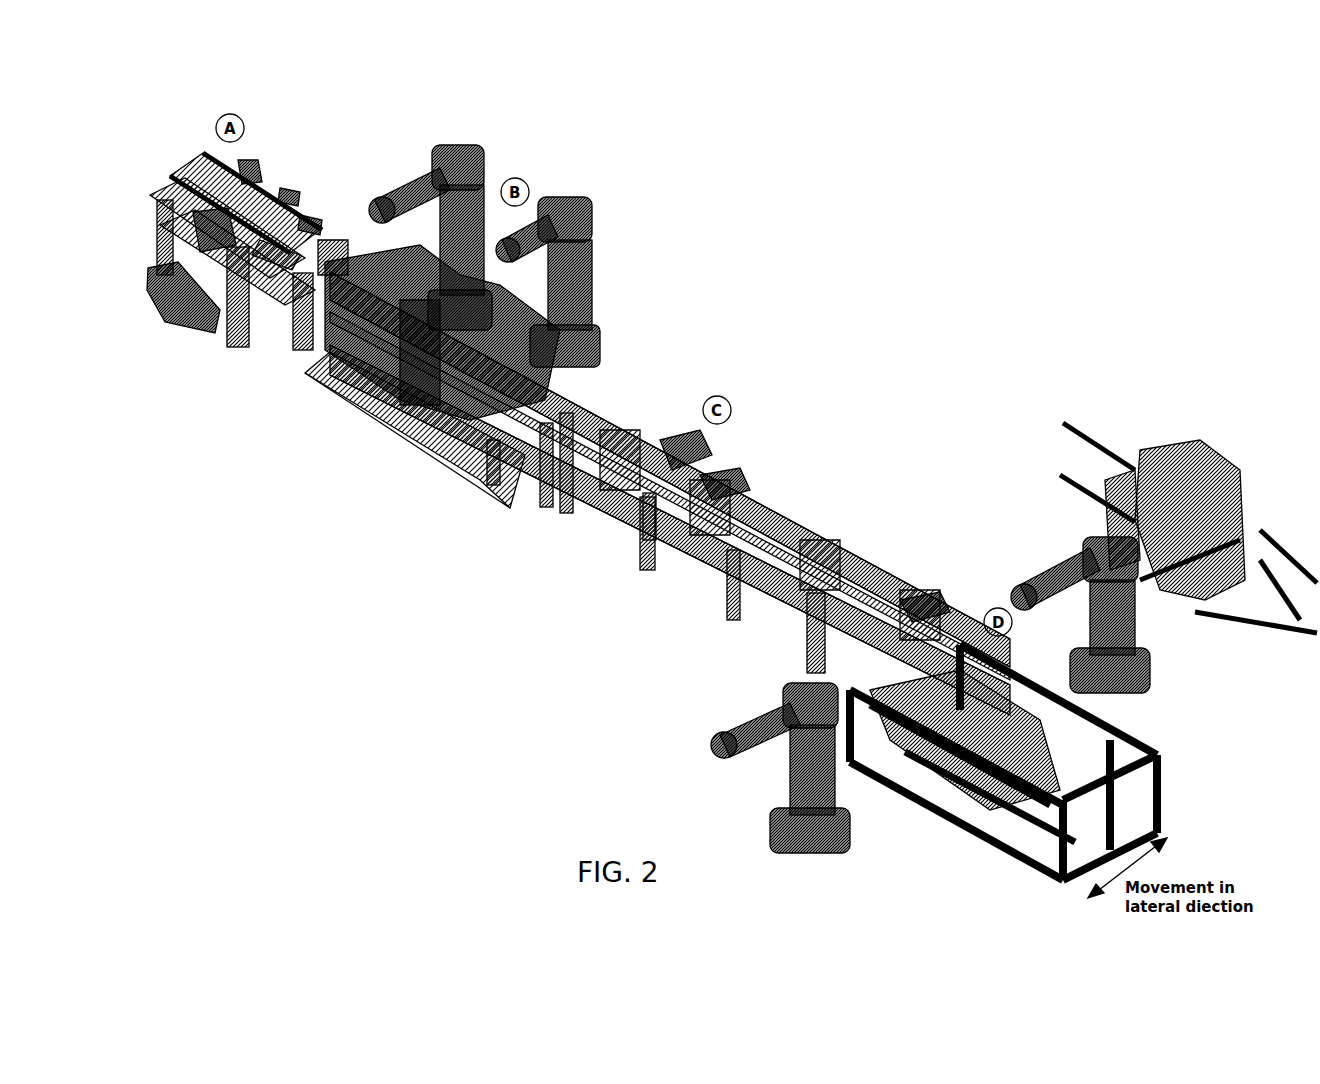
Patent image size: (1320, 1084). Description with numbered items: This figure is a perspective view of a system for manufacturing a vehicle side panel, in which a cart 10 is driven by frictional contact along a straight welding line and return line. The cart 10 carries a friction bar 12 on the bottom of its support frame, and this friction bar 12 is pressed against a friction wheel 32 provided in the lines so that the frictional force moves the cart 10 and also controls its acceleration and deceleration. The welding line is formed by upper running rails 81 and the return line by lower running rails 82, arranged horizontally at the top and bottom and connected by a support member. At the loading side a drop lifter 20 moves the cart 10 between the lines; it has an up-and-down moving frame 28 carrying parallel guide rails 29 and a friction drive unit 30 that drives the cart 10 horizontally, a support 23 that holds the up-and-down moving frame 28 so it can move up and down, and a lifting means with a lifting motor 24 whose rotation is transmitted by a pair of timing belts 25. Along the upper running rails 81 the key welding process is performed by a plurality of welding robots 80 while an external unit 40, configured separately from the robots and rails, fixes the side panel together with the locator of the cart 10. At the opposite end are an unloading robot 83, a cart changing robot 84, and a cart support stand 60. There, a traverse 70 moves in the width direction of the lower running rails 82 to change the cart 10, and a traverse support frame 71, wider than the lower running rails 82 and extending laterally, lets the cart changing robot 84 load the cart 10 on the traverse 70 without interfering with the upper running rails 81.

The cart 10 is at (424, 404).
The friction bar 12 is at (331, 262).
The drop lifter 20 is at (205, 152).
The support 23 is at (155, 230).
The lifting motor 24 is at (222, 250).
The timing belts 25 is at (168, 300).
The up-and-down moving frame 28 is at (275, 262).
The guide rails 29 is at (311, 226).
The friction drive unit 30 is at (245, 170).
The friction wheel 32 is at (290, 200).
The external unit 40 is at (350, 414).
The cart support stand 60 is at (1205, 485).
The traverse 70 is at (985, 845).
The traverse support frame 71 is at (1030, 865).
The welding robots 80 is at (470, 165).
The upper running rails 81 is at (617, 423).
The lower running rails 82 is at (603, 508).
The unloading robot 83 is at (780, 785).
The cart changing robot 84 is at (1130, 610).